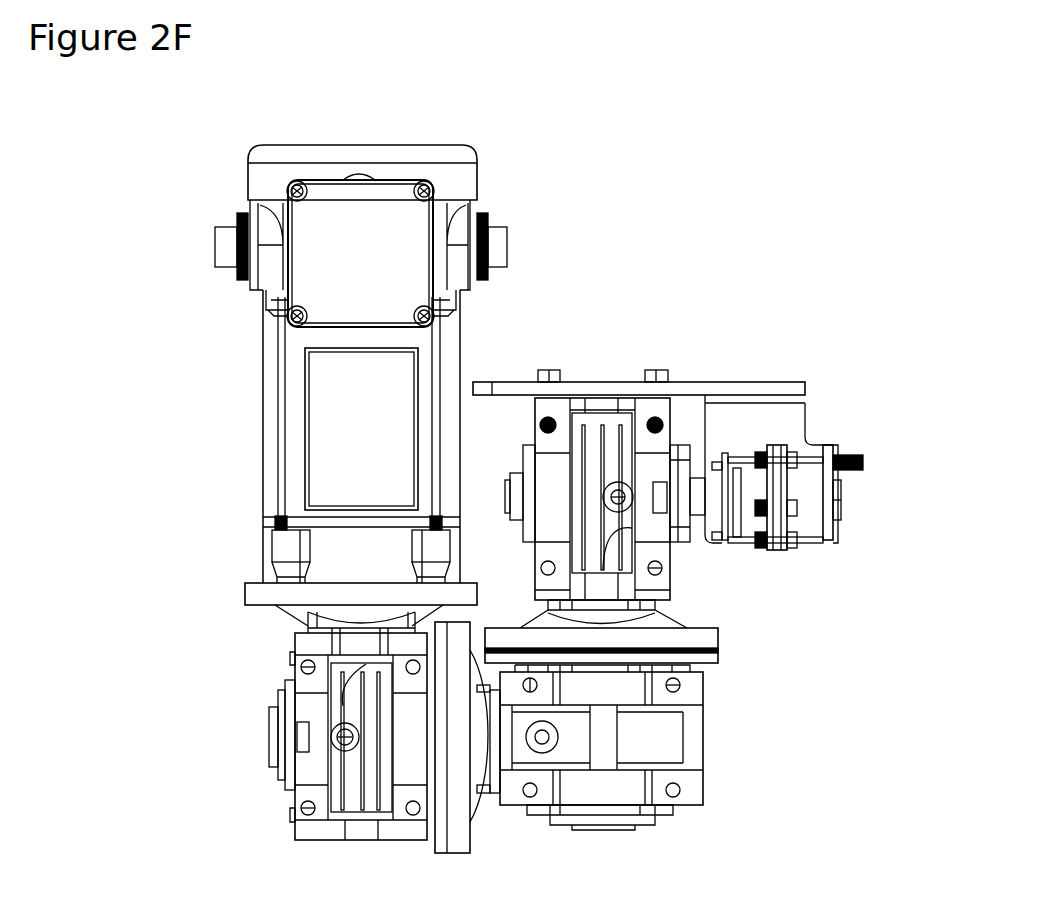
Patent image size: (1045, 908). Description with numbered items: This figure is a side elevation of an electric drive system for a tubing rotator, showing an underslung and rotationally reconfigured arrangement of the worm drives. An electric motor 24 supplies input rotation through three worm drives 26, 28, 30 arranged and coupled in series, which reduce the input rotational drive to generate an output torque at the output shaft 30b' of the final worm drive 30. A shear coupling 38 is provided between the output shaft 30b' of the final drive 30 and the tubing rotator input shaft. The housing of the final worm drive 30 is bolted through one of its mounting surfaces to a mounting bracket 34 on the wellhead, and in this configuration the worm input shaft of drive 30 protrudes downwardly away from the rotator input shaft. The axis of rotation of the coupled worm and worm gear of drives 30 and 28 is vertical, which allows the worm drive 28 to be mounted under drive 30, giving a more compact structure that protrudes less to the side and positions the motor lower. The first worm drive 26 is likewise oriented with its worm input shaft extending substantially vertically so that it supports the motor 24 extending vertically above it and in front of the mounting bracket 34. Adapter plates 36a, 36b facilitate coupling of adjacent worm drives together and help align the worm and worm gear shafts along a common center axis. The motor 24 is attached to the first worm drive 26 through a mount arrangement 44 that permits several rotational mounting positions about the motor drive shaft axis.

The electric motor 24 is at (268, 488).
The mount arrangement 44 is at (290, 558).
The first worm drive 26 is at (317, 693).
The adapter plate 36a is at (443, 845).
The adapter plate 36b is at (712, 658).
The second worm drive 28 is at (660, 738).
The mounting bracket 34 is at (683, 383).
The final worm drive 30 is at (660, 558).
The output shaft 30b' is at (781, 425).
The shear coupling 38 is at (810, 517).